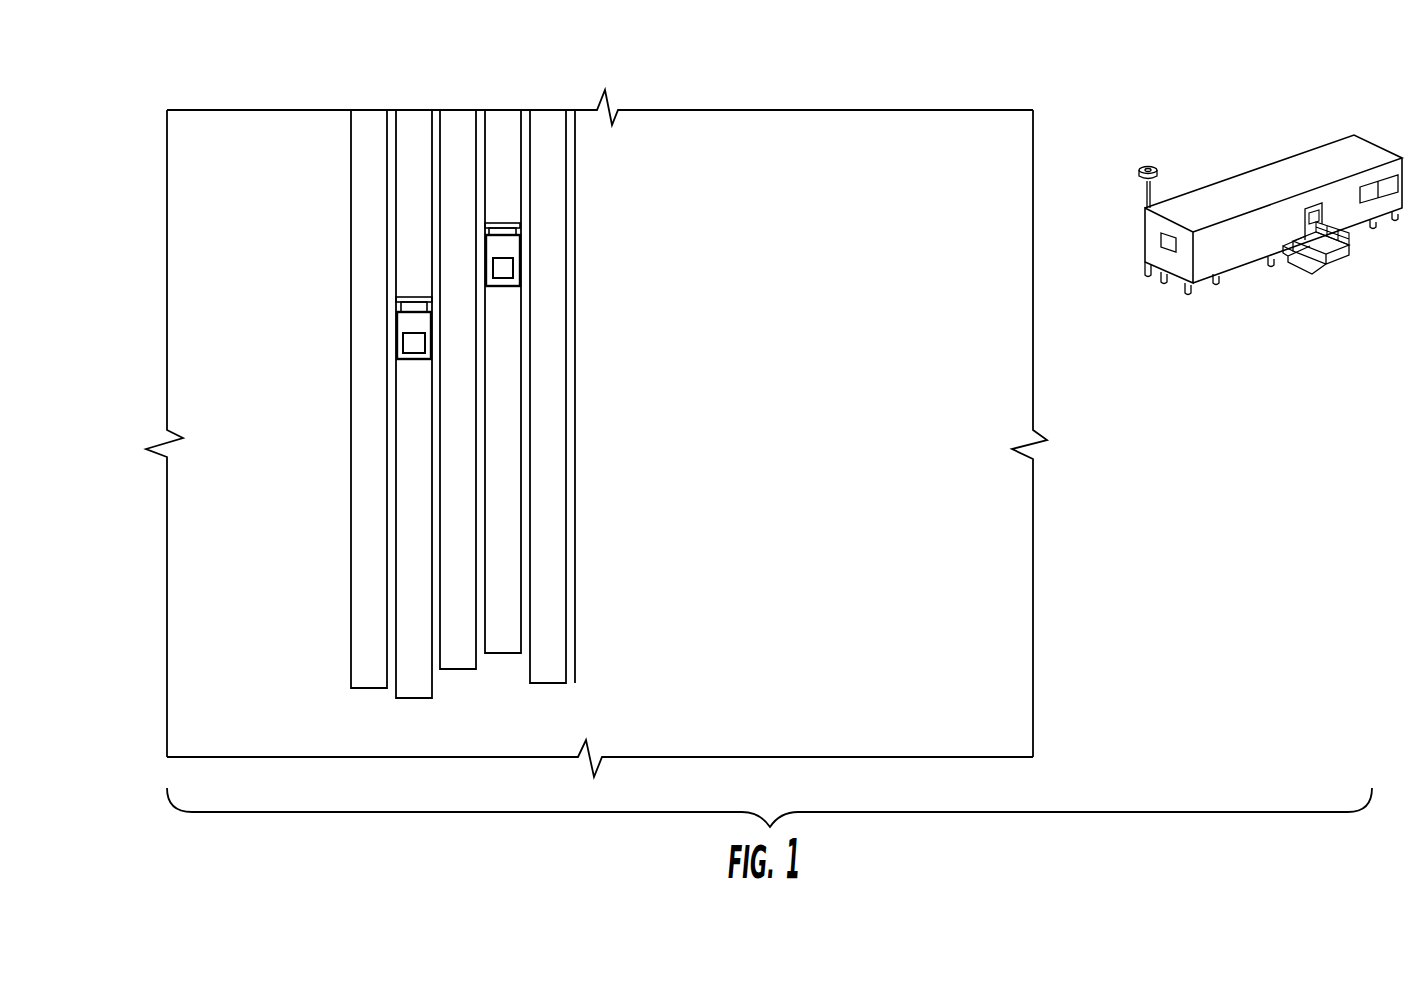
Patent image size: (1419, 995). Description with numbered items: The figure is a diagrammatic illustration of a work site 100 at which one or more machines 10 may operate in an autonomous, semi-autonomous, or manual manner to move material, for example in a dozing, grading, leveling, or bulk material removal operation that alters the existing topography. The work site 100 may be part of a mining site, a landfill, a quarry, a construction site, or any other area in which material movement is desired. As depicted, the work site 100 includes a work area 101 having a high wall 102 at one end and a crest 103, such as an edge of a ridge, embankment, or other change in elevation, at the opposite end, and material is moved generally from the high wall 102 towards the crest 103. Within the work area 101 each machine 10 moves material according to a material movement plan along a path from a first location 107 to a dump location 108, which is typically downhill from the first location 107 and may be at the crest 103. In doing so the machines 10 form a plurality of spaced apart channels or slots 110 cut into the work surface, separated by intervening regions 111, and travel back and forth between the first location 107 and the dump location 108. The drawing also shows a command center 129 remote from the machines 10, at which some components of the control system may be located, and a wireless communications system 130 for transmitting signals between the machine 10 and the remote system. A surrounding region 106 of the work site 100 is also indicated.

The work site 100 is at (218, 78).
The machine 10 is at (508, 247).
The work area 101 is at (781, 190).
The high wall 102 is at (975, 757).
The crest 103 is at (290, 110).
The mat panel 106 is at (247, 144).
The first location 107 is at (607, 678).
The dump location 108 is at (409, 100).
The slots 110 is at (412, 487).
The gap between strips 111 is at (433, 412).
The command center 129 is at (1270, 180).
The wireless communications system 130 is at (1162, 172).